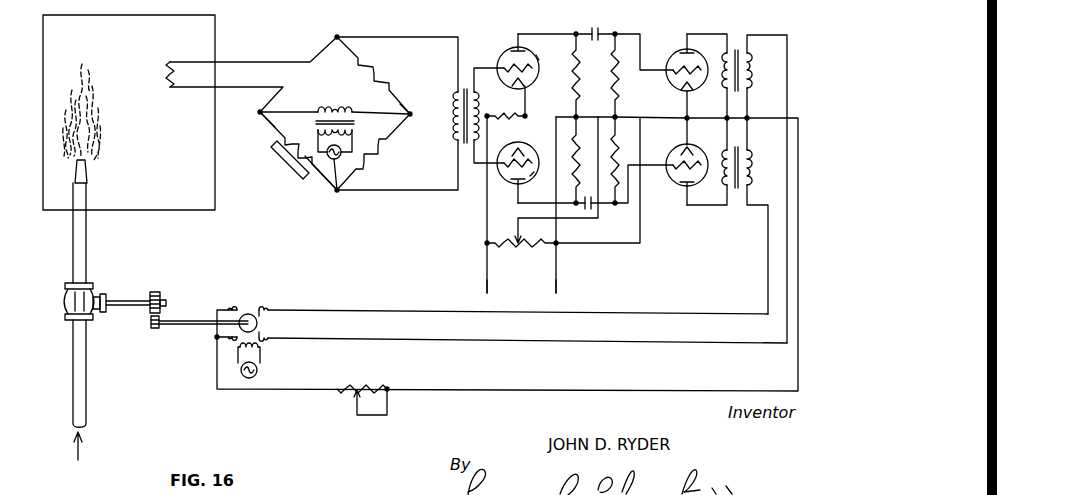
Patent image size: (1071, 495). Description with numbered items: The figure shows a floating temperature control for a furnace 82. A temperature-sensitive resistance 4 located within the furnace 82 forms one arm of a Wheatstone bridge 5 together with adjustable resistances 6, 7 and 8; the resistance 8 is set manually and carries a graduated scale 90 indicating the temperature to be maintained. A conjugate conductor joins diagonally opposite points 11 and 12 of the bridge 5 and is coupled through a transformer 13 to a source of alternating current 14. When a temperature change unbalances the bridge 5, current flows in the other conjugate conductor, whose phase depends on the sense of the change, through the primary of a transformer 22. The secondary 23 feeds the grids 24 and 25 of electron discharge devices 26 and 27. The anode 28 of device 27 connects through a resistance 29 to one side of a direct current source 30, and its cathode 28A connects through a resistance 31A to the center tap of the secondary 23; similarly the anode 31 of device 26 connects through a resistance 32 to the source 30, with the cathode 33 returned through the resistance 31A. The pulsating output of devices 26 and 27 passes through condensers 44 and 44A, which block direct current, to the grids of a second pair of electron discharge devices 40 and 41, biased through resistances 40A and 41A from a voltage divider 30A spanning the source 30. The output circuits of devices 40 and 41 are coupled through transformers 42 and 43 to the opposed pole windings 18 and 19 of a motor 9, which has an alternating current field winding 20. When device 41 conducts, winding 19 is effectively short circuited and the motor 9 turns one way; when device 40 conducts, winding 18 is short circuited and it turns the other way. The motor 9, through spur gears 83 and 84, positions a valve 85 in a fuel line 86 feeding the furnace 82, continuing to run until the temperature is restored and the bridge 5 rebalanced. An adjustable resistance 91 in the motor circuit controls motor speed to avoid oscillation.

The furnace 82 is at (216, 31).
The resistance 4 is at (167, 72).
The Wheatstone bridge 5 is at (343, 91).
The adjustable resistance 6 is at (390, 78).
The adjustable resistance 7 is at (393, 150).
The balancing resistance 8 is at (311, 181).
The bridge point 11 is at (259, 114).
The bridge point 12 is at (412, 112).
The transformer 13 is at (356, 123).
The source of alternating current 14 is at (343, 187).
The graduated scale 90 is at (288, 173).
The transformer 22 is at (463, 142).
The secondary 23 is at (478, 99).
The grid 25 is at (536, 58).
The electron discharge device 27 is at (500, 68).
The anode 28 is at (514, 49).
The cathode 28A is at (525, 84).
The resistance 31A is at (526, 114).
The cathode 33 is at (512, 152).
The grid 24 is at (528, 152).
The anode 31 is at (512, 180).
The electron discharge device 26 is at (527, 178).
The resistance 29 is at (577, 72).
The resistance 32 is at (580, 140).
The condenser 44 is at (598, 30).
The condenser 44A is at (590, 210).
The resistance 41A is at (618, 84).
The resistance 40A is at (620, 182).
The electron discharge device 41 is at (675, 52).
The electron discharge device 40 is at (700, 152).
The transformer 43 is at (737, 50).
The transformer 42 is at (738, 192).
The voltage divider 30A is at (500, 240).
The direct current source 30 is at (548, 271).
The motor 9 is at (250, 312).
The pole winding 18 is at (226, 306).
The pole winding 19 is at (268, 312).
The alternating current field winding 20 is at (262, 354).
The adjustable resistance 91 is at (376, 385).
The spur gear 84 is at (160, 296).
The spur gear 83 is at (158, 328).
The valve 85 is at (100, 312).
The fuel line 86 is at (86, 372).